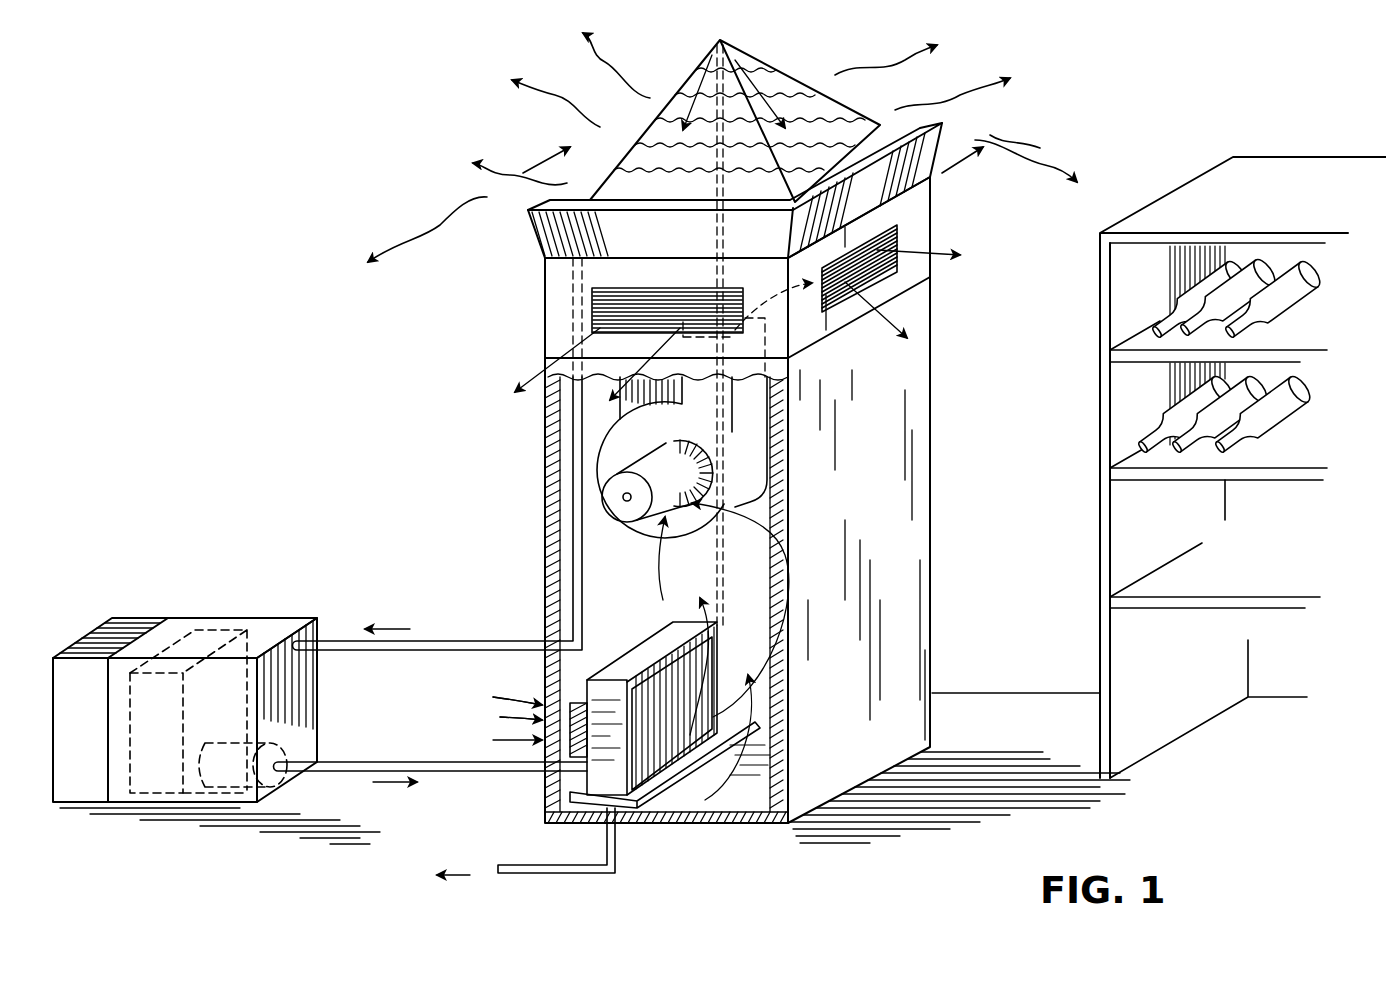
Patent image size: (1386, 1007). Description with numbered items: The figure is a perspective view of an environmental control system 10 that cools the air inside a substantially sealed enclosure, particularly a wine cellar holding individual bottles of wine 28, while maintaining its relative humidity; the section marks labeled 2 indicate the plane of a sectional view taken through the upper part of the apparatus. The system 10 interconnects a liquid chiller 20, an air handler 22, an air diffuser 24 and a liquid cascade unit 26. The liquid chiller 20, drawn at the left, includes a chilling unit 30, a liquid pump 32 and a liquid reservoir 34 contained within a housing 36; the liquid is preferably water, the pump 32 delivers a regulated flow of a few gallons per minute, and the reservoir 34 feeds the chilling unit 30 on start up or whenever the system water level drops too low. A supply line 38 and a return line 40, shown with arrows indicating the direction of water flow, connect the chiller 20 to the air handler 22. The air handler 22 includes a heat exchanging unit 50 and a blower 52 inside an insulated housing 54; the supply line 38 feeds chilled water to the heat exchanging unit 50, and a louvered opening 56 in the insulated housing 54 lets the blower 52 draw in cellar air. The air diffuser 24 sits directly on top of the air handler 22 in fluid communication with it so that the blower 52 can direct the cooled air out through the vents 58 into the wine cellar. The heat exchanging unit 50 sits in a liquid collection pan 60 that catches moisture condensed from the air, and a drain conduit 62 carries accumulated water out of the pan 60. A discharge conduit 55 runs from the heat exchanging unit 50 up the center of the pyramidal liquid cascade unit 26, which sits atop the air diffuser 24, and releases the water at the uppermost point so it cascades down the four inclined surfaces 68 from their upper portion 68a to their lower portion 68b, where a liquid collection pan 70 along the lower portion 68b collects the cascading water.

The section line 2- 2 is at (745, 167).
The environmental control system 10 is at (265, 340).
The liquid chiller 20 is at (216, 696).
The air handler 22 is at (934, 527).
The air diffuser 24 is at (934, 239).
The liquid cascade unit 26 is at (791, 84).
The bottles of wine 28 is at (1254, 275).
The chilling unit 30 is at (130, 748).
The liquid pump 32 is at (228, 742).
The liquid reservoir 34 is at (117, 620).
The housing 36 is at (295, 625).
The supply line 38 is at (440, 773).
The return line 40 is at (480, 640).
The heat exchanging unit 50 is at (640, 656).
The blower 52 is at (602, 447).
The insulated housing 54 is at (545, 508).
The discharge conduit 55 is at (718, 235).
The louvered opening 56 is at (568, 700).
The vents 58 is at (592, 301).
The liquid collection pan 60 is at (690, 775).
The drain conduit 62 is at (558, 880).
The inclined surfaces 68 is at (657, 116).
The upper portion 68a is at (712, 40).
The lower portion 68b is at (915, 120).
The liquid collection pan 70 is at (540, 240).